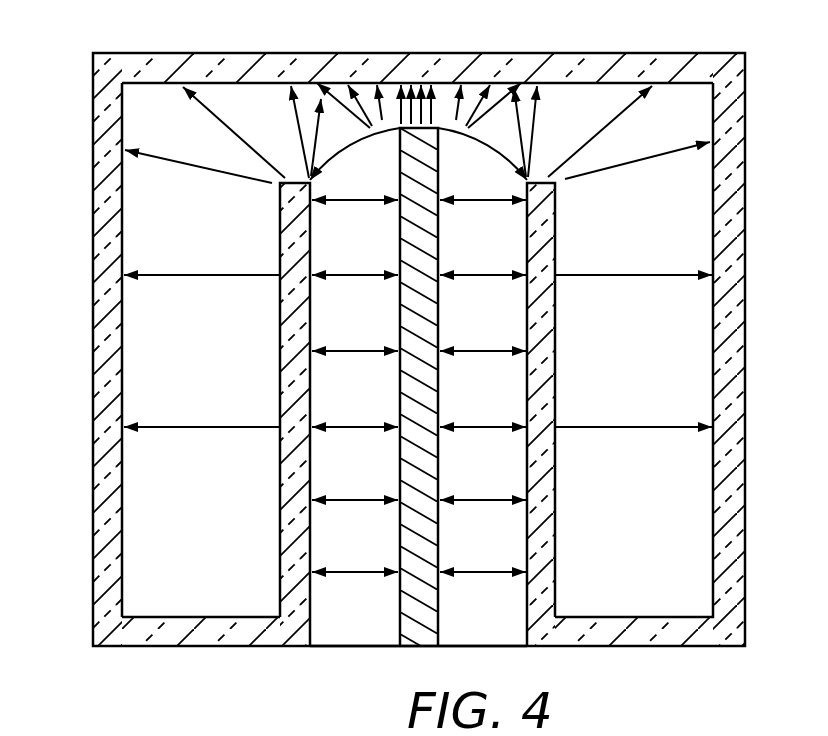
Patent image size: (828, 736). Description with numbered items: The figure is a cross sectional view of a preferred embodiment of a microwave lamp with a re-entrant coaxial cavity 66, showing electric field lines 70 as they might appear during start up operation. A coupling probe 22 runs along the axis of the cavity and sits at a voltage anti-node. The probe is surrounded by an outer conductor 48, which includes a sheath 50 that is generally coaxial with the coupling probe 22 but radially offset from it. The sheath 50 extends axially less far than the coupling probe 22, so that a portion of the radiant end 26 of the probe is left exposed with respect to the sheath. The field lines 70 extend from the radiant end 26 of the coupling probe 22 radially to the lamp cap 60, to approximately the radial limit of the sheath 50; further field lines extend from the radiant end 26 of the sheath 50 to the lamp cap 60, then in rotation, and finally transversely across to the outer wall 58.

The coupling probe 22 is at (425, 645).
The radiant end 26 is at (440, 184).
The outer conductor 48 is at (94, 472).
The sheath 50 is at (281, 512).
The outer wall 58 is at (93, 128).
The lamp cap 60 is at (370, 52).
The re-entrant coaxial cavity 66 is at (198, 226).
The electric field lines 70 is at (623, 272).